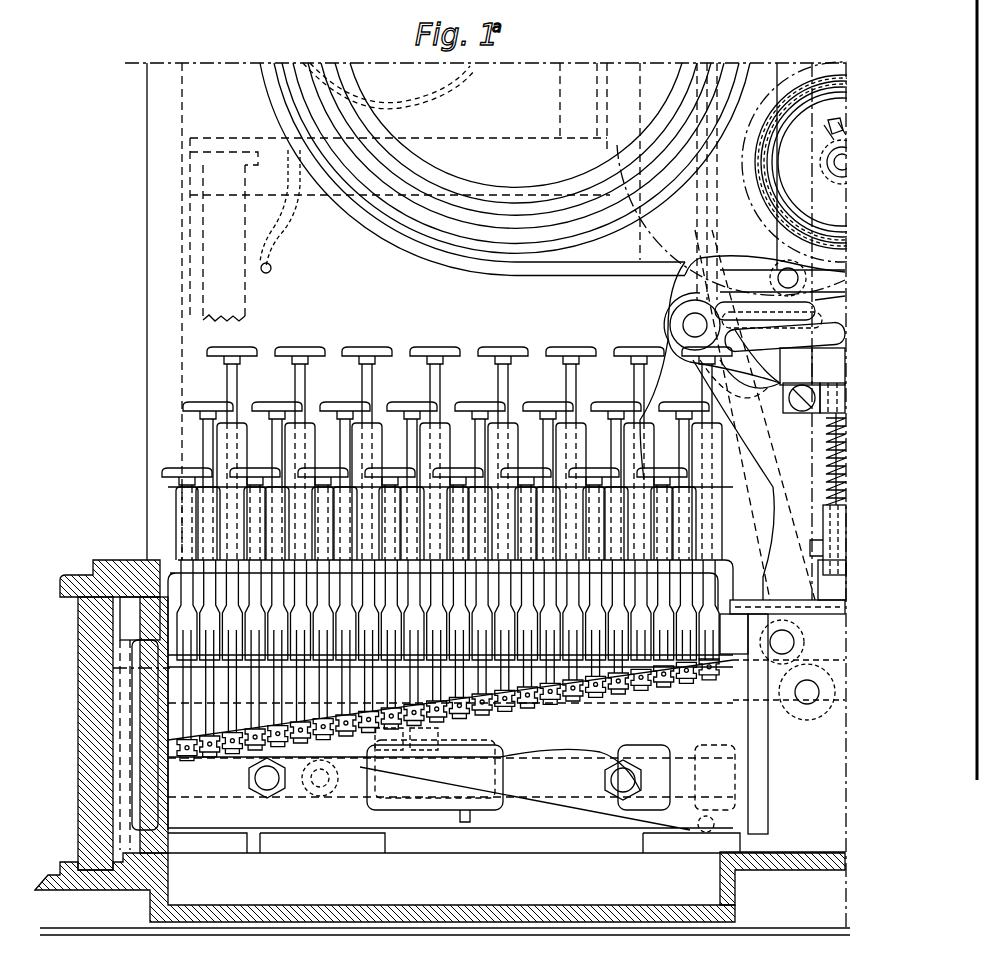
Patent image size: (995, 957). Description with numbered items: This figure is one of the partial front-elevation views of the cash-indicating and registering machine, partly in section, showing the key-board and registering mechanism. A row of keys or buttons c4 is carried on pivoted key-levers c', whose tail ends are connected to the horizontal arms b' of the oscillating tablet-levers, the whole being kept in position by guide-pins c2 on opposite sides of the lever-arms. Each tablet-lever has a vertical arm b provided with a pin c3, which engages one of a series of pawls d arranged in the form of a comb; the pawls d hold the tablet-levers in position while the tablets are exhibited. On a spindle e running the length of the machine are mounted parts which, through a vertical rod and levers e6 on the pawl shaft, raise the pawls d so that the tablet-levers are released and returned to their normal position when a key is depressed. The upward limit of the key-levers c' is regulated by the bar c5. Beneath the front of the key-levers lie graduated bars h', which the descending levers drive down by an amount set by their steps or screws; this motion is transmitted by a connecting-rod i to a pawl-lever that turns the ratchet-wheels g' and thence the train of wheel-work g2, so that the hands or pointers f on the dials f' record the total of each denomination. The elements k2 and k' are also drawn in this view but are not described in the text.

The dial f' is at (505, 169).
The ratchet-wheel g' is at (391, 86).
The connecting-rod i is at (280, 211).
The train of wheel-work or gearing g2 is at (842, 162).
The hand or pointer f is at (835, 112).
The pawl d is at (742, 368).
The lever e6 is at (784, 337).
The pin c3 is at (830, 308).
The vertical arm of tablet-lever b is at (772, 371).
The spindle e is at (826, 440).
The bar c5 is at (830, 540).
The guide-pin c2 is at (832, 579).
The key or button c4 is at (447, 443).
The key-lever c' is at (448, 650).
The rollers k2 is at (200, 735).
The lever k' is at (450, 778).
The graduated bar h' is at (518, 775).
The horizontal arm of tablet-lever b' is at (770, 717).